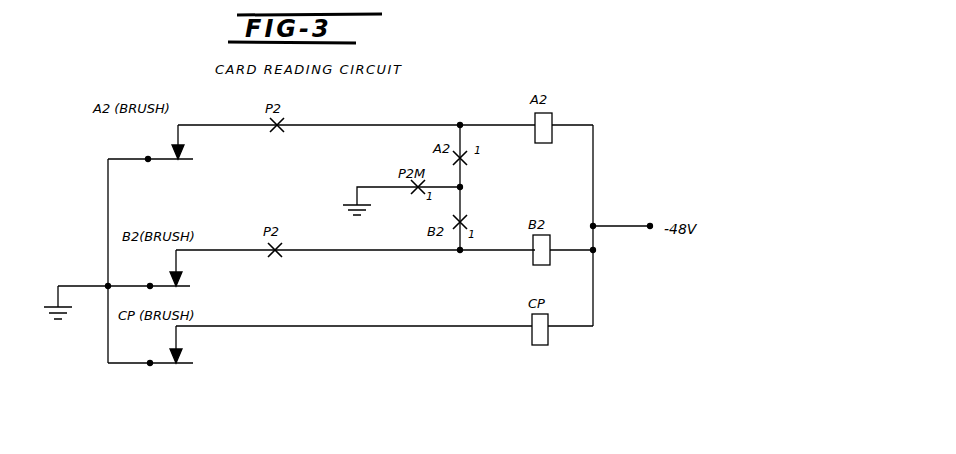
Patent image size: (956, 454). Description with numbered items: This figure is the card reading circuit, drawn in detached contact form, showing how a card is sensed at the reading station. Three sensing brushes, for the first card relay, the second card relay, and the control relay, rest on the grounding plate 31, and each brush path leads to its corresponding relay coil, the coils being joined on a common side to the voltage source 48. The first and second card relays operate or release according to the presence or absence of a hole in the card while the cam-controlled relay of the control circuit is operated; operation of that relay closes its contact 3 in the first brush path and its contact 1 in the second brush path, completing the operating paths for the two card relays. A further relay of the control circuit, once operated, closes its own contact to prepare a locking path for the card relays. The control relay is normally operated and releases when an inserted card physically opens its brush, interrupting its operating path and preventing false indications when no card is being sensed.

The grounding plate 31 is at (58, 296).
The voltage source 48 is at (653, 222).
The 3MP2 contact 3 is at (282, 129).
The 1MP2 contact 1 is at (280, 254).